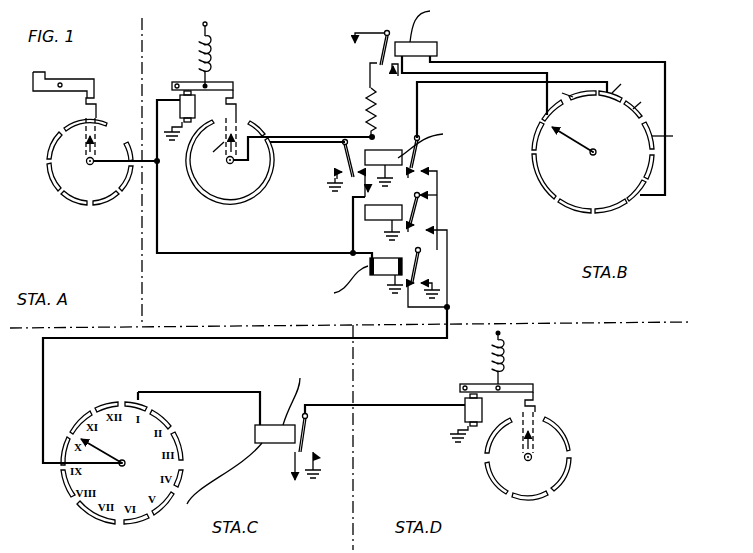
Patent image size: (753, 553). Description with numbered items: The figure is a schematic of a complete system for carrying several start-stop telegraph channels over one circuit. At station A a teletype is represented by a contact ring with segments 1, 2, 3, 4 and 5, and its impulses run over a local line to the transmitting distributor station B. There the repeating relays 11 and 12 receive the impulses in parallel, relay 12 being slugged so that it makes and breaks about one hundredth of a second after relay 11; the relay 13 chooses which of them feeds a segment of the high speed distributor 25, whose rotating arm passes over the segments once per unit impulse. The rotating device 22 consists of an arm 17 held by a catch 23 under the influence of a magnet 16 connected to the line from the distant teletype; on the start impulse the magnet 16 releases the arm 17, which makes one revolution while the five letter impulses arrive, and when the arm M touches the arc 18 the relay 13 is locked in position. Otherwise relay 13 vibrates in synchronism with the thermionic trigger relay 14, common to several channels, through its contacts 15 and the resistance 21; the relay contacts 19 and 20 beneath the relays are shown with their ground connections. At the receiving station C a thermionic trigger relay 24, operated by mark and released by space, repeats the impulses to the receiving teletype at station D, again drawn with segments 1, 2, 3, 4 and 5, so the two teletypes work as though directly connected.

The contact segment 1 is at (350, 308).
The contact segment 2 is at (338, 341).
The contact segment 3 is at (304, 357).
The contact segment 4 is at (269, 328).
The contact segment / relay coil 5 is at (261, 289).
The repeating relay 11 is at (383, 225).
The slugged repeating relay 12 is at (454, 181).
The selecting relay 13 is at (424, 156).
The thermionic trigger relay 14 is at (502, 30).
The contacts 15 is at (376, 60).
The magnet 16 is at (194, 115).
The arm 17 is at (243, 129).
The arc 18 is at (236, 163).
The relay contact 19 is at (347, 169).
The relay contact 20 is at (428, 182).
The resistance 21 is at (357, 112).
The rotating device 22 is at (217, 183).
The catch 23 is at (213, 70).
The thermionic trigger relay 24 is at (307, 431).
The high speed distributor 25 is at (609, 145).